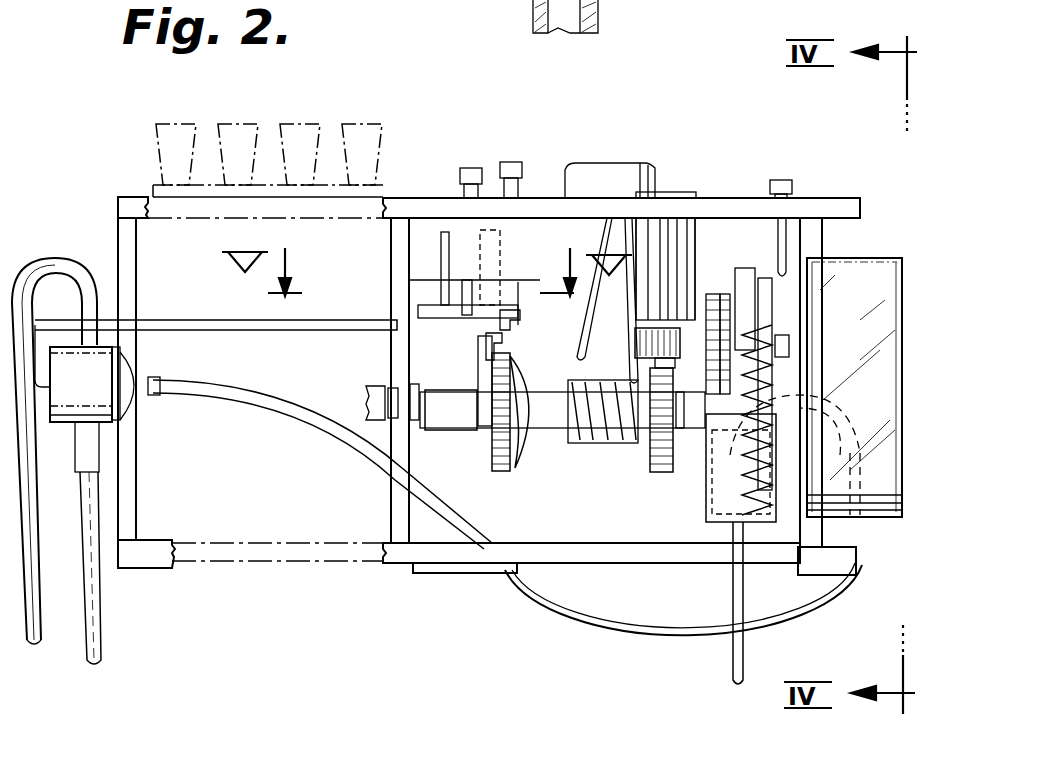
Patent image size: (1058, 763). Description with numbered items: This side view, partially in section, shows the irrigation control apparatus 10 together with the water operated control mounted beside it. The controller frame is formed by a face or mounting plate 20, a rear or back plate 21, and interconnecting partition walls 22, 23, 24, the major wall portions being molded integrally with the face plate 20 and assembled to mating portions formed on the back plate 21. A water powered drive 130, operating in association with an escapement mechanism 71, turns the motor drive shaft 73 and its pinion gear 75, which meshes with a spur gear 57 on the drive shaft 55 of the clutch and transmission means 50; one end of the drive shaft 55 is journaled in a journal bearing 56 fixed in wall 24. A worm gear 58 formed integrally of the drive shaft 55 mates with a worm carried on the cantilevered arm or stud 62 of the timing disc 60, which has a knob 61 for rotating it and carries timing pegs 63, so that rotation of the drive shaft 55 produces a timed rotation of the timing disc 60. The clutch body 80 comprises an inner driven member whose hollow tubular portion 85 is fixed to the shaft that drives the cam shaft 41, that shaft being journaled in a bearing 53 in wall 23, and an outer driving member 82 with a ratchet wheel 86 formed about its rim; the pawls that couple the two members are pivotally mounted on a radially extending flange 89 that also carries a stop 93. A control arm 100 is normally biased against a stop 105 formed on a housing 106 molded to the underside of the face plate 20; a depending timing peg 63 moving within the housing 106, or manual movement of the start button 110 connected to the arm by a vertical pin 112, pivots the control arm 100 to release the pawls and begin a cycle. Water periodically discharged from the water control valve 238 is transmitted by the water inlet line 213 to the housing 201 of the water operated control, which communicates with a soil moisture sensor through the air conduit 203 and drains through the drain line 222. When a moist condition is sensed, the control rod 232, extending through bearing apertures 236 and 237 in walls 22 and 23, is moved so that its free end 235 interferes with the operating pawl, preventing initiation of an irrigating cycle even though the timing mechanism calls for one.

The irrigation control apparatus 10 is at (380, 580).
The face or mounting plate 20 is at (402, 205).
The rear or back plate 21 is at (495, 550).
The partition wall 22 is at (123, 498).
The partition wall 23 is at (400, 515).
The partition wall 24 is at (693, 237).
The cam shaft 41 is at (372, 400).
The clutch and transmission means 50 is at (683, 599).
The bearing 53 is at (392, 428).
The drive shaft 55 is at (548, 422).
The journal bearing 56 is at (692, 465).
The spur gear 57 is at (648, 467).
The worm gear 58 is at (628, 427).
The timing disc 60 is at (540, 197).
The knob 61 is at (617, 168).
The cantilevered arm or stud 62 is at (643, 330).
The timing pegs 63 is at (472, 172).
The escapement mechanism 71 is at (876, 250).
The motor drive shaft 73 is at (683, 340).
The pinion gear 75 is at (740, 328).
The clutch body 80 is at (461, 458).
The outer driving member 82 is at (520, 430).
The hollow tubular portion 85 is at (463, 368).
The ratchet wheel 86 is at (510, 392).
The radially extending flange 89 is at (480, 343).
The stop 93 is at (505, 343).
The control arm 100 is at (432, 308).
The stop 105 is at (470, 290).
The housing 106 is at (642, 233).
The start button 110 is at (510, 170).
The vertical pin 112 is at (508, 303).
The water powered drive 130 is at (695, 512).
The housing 201 is at (84, 373).
The air conduit 203 is at (53, 262).
The water inlet line 213 is at (178, 385).
The drain line 222 is at (97, 607).
The control rod 232 is at (254, 325).
The free end 235 is at (503, 325).
The bearing aperture 236 is at (133, 332).
The bearing aperture 237 is at (397, 327).
The water control valve 238 is at (725, 520).